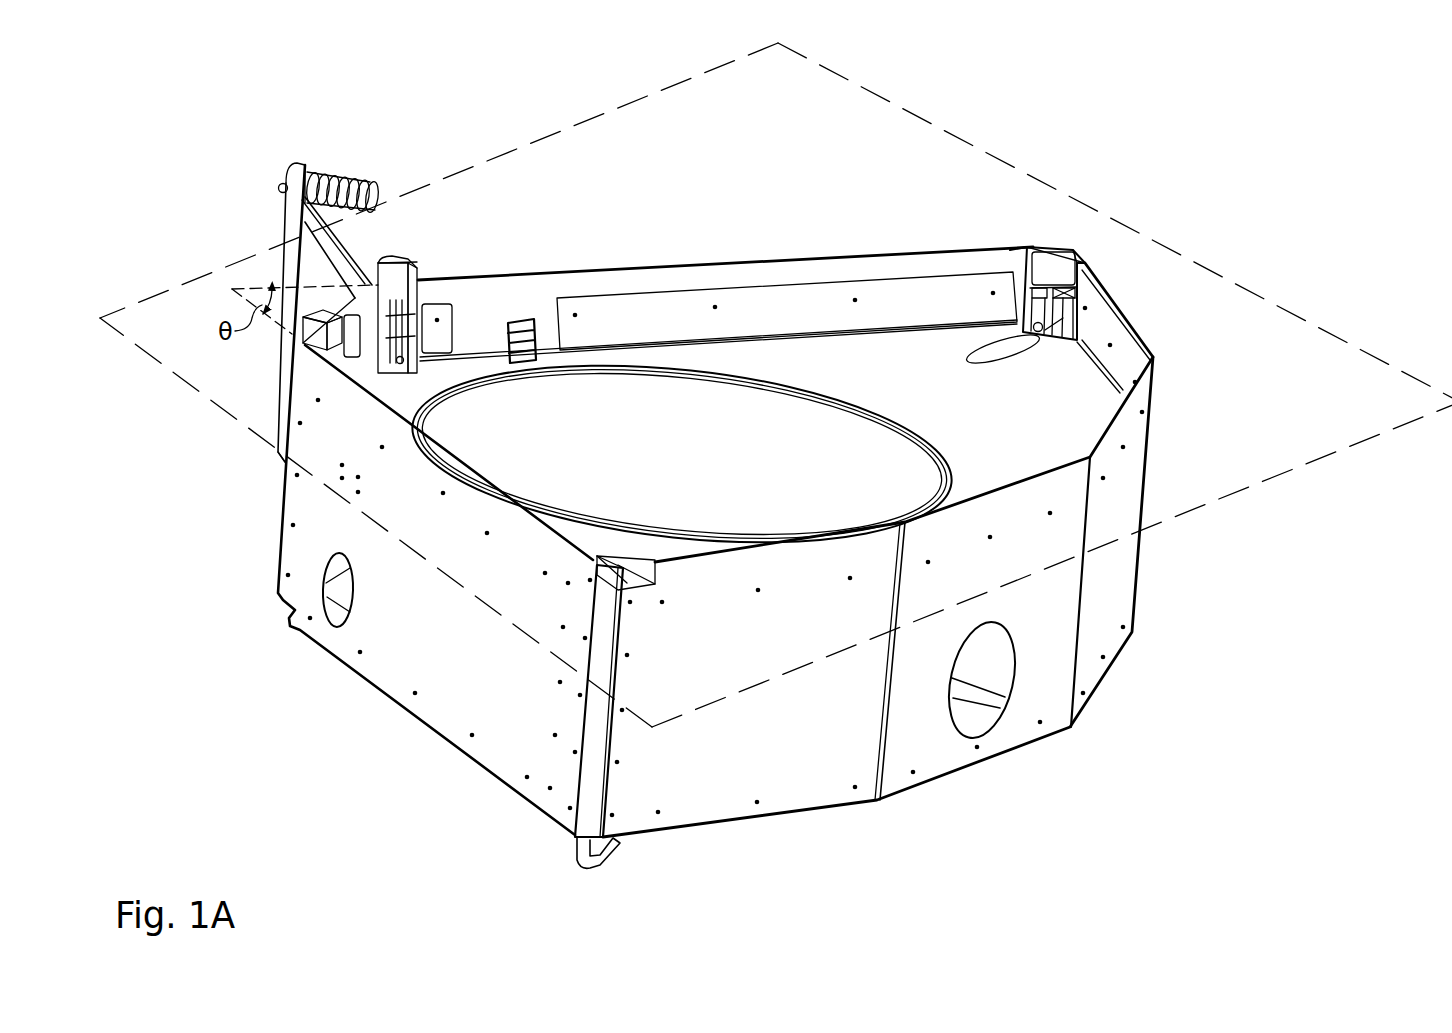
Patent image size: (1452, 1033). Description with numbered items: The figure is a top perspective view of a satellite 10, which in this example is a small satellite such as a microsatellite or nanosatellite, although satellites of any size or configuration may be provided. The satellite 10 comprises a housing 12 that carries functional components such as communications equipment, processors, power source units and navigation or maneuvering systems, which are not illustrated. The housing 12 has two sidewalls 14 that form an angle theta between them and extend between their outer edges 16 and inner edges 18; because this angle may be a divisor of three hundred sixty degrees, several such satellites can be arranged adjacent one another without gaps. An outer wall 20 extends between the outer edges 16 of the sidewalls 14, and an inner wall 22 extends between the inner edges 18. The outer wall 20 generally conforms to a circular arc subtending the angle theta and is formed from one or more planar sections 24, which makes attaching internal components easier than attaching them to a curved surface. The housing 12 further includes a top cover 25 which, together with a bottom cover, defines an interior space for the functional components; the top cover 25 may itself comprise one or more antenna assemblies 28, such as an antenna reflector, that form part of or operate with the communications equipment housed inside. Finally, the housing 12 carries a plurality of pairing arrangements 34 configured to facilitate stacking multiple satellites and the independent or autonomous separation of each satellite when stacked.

The satellite 10 is at (1202, 186).
The housing 12 is at (1235, 464).
The sidewalls 14 is at (559, 272).
The outer edges 16 is at (1040, 240).
The inner edges 18 is at (418, 266).
The outer wall 20 is at (1037, 475).
The inner wall 22 is at (357, 237).
The planar sections 24 is at (1125, 320).
The top cover 25 is at (838, 373).
The antenna assemblies 28 is at (688, 413).
The pairing arrangements 34 is at (412, 256).